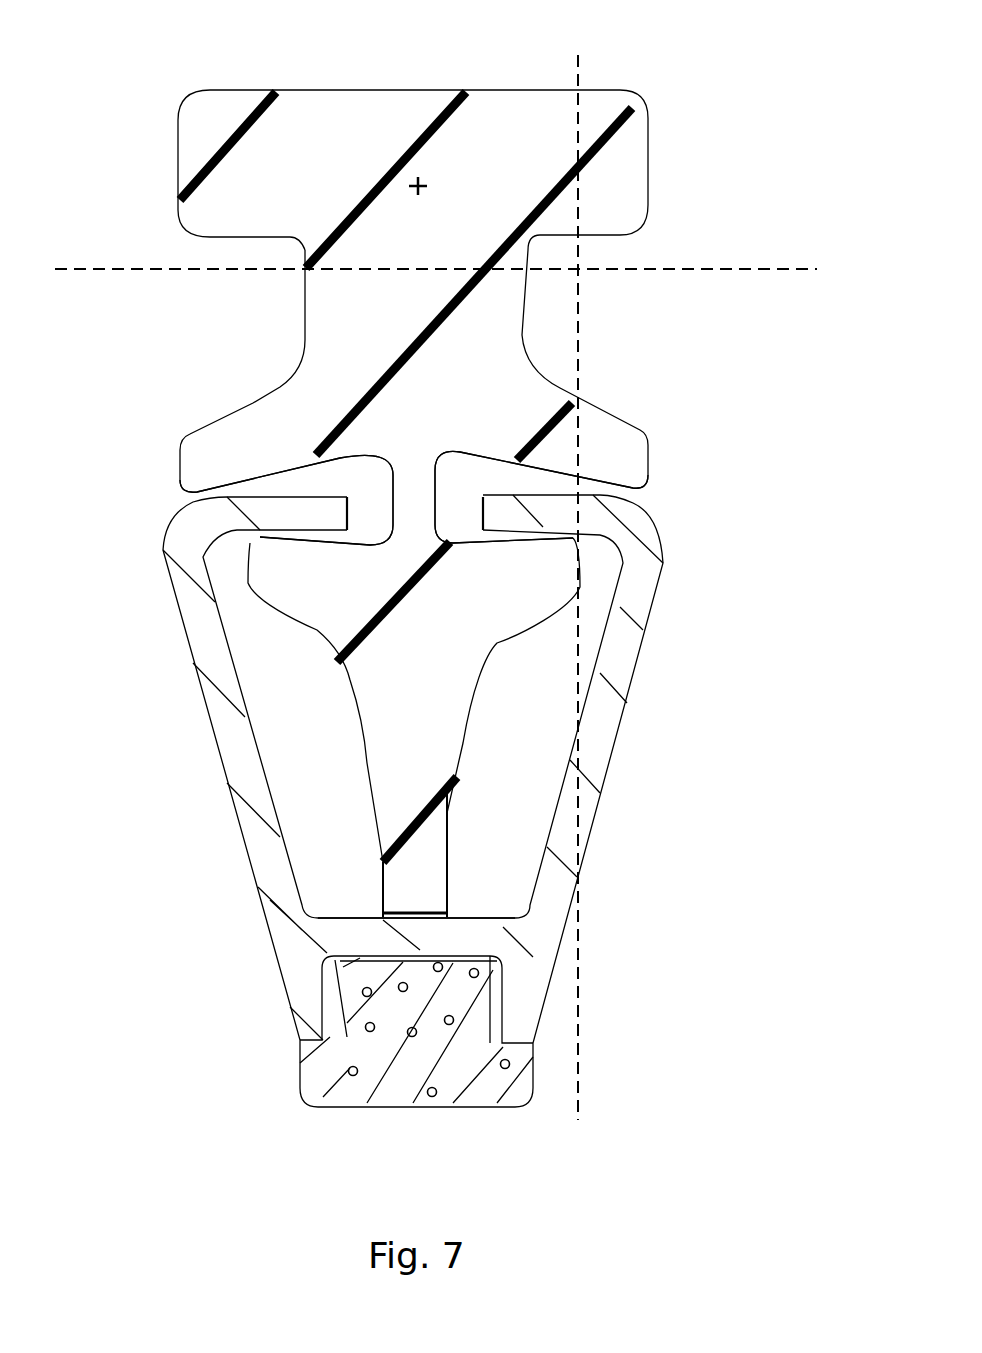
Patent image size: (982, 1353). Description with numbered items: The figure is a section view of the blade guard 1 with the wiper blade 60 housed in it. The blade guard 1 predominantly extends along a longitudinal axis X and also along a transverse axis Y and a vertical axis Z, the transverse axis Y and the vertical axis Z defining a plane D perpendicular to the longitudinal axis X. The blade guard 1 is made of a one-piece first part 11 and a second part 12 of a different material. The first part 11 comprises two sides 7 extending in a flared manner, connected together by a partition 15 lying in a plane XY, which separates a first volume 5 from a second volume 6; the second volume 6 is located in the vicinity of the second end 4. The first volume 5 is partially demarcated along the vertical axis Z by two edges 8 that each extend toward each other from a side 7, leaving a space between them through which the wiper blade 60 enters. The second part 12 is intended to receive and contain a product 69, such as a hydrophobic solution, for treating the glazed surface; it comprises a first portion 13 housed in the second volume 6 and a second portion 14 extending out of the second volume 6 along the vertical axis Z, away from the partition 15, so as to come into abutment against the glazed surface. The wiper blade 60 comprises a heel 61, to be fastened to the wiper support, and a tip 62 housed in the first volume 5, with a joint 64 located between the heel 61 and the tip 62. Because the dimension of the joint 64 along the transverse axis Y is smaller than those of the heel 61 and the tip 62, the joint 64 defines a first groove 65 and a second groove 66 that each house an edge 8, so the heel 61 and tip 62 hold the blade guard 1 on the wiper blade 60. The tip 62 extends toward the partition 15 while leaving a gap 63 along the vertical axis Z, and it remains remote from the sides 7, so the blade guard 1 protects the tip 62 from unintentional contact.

The blade guard 1 is at (652, 1008).
The second end 4 is at (443, 1135).
The first volume 5 is at (266, 757).
The second volume 6 is at (514, 965).
The sides 7 is at (227, 715).
The edges 8 is at (310, 514).
The first part 11 is at (186, 603).
The second part 12 is at (321, 1068).
The first portion 13 is at (368, 980).
The second portion 14 is at (470, 1075).
The partition 15 is at (347, 932).
The wiper blade 60 is at (290, 412).
The heel 61 is at (300, 197).
The tip 62 is at (422, 755).
The gap 63 is at (432, 912).
The joint 64 is at (415, 477).
The first groove 65 is at (316, 480).
The second groove 66 is at (486, 482).
The product 69 is at (355, 1077).
The longitudinal axis X is at (418, 178).
The transverse axis Y is at (760, 268).
The vertical axis Z is at (580, 108).
The plane D is at (610, 298).